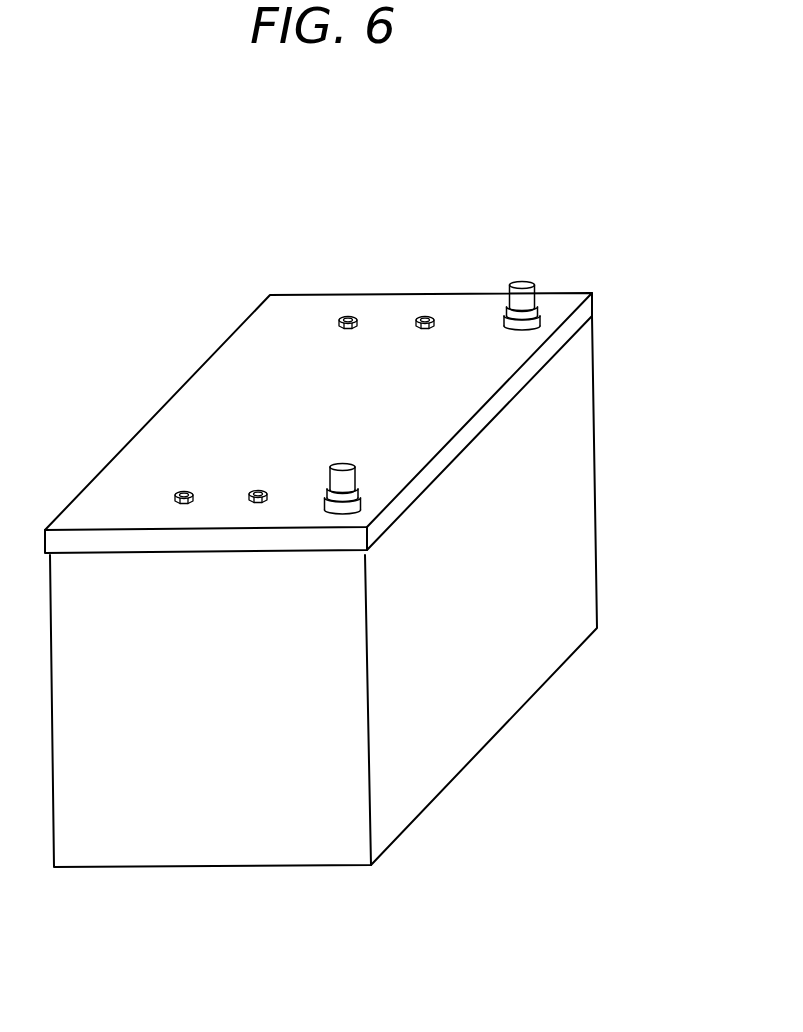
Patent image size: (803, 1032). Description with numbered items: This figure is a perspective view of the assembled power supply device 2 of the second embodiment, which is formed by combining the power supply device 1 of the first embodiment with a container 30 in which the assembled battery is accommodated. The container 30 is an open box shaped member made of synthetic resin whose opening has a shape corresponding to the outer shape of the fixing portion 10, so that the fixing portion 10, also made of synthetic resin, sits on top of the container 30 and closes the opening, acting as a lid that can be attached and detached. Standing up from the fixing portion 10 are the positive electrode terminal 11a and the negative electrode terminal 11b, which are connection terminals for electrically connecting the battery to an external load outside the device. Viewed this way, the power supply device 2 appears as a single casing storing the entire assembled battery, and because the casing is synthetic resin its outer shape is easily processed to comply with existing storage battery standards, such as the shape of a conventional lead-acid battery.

The power supply device 2 is at (539, 131).
The power supply device 1 is at (454, 274).
The fixing portion 10 is at (184, 385).
The positive electrode terminal 11a is at (537, 293).
The negative electrode terminal 11b is at (357, 482).
The container 30 is at (597, 448).